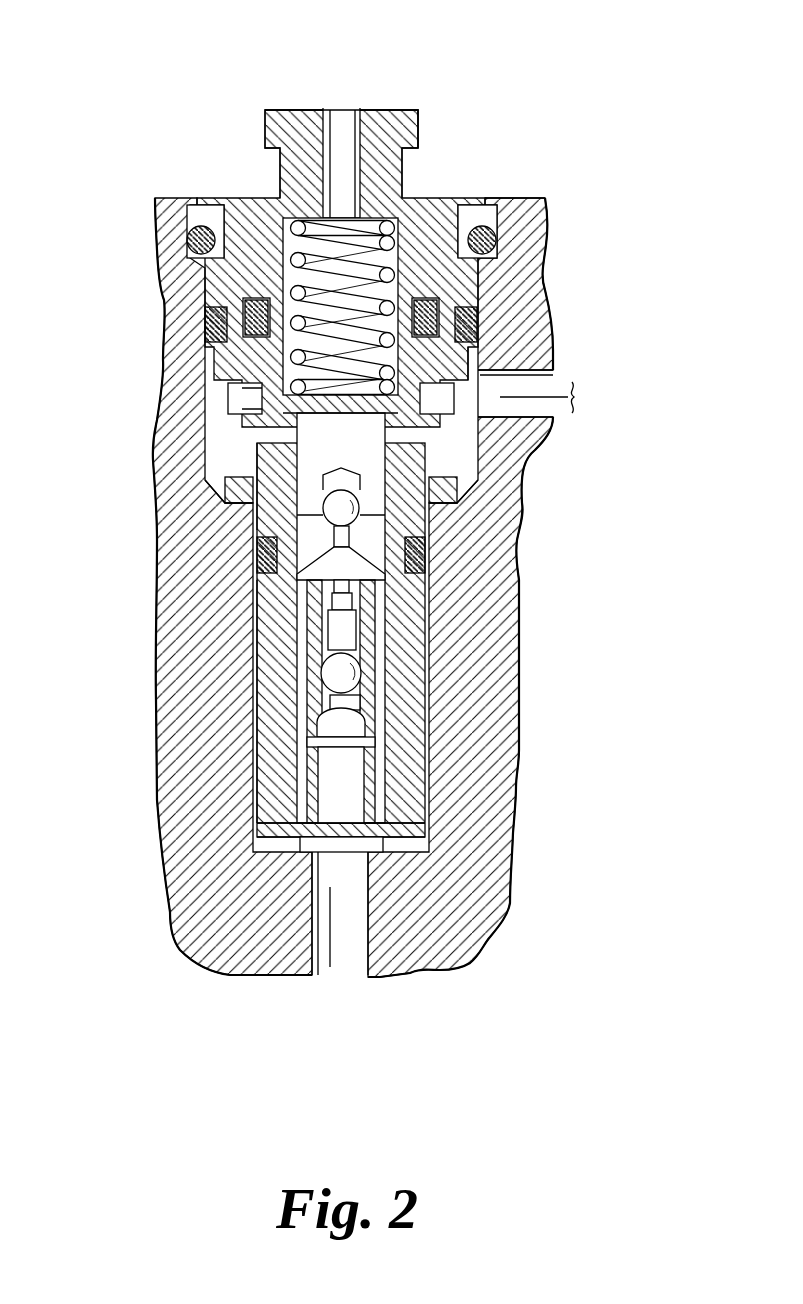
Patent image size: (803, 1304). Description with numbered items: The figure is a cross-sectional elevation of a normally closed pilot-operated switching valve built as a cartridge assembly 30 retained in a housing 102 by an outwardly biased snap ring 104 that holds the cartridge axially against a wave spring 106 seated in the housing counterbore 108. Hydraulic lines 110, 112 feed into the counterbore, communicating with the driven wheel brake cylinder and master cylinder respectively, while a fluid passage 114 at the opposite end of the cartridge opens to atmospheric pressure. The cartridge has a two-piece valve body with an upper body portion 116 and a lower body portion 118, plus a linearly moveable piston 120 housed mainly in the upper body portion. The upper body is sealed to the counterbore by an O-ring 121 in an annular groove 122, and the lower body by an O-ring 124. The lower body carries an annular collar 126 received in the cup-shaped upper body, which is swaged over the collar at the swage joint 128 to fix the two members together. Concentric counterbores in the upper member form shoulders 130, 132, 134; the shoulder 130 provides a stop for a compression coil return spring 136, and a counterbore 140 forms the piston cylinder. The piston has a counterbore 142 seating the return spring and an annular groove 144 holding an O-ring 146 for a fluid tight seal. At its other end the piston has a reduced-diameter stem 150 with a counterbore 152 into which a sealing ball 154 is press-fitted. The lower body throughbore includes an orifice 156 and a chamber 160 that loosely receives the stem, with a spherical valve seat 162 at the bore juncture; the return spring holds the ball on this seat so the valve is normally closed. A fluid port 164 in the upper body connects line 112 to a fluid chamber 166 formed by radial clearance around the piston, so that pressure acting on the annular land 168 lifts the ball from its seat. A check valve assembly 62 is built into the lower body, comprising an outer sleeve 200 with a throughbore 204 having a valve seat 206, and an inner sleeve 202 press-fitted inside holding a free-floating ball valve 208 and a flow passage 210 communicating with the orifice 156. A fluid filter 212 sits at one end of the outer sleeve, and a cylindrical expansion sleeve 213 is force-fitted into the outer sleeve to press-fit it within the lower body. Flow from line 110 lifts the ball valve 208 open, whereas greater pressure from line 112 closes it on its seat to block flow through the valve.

The cartridge assembly 30 is at (420, 108).
The check valve assembly 62 is at (290, 677).
The housing 102 is at (548, 280).
The snap ring 104 is at (435, 295).
The wave spring 106 is at (425, 590).
The housing counterbore 108 is at (432, 548).
The hydraulic line 110 is at (348, 943).
The hydraulic line 112 is at (552, 395).
The fluid passage 114 is at (340, 132).
The upper body portion 116 is at (266, 214).
The lower body portion 118 is at (262, 556).
The piston 120 is at (278, 410).
The O-ring 121 is at (232, 318).
The annular groove 122 is at (214, 345).
The O-ring 124 is at (262, 590).
The annular collar 126 is at (270, 527).
The swage joint 128 is at (232, 495).
The shoulder 130 is at (378, 224).
The shoulder 132 is at (392, 290).
The shoulder 134 is at (478, 440).
The return spring 136 is at (228, 208).
The counterbore 140 is at (530, 238).
The piston counterbore 142 is at (470, 333).
The annular groove 144 is at (245, 405).
The O-ring 146 is at (228, 385).
The stem 150 is at (357, 510).
The counterbore 152 is at (400, 516).
The sealing ball 154 is at (380, 585).
The orifice 156 is at (356, 625).
The chamber 160 is at (418, 562).
The spherical valve seat 162 is at (392, 608).
The fluid port 164 is at (392, 358).
The fluid chamber 166 is at (457, 387).
The annular land 168 is at (238, 482).
The outer sleeve 200 is at (350, 673).
The inner sleeve 202 is at (364, 670).
The throughbore 204 is at (362, 740).
The valve seat 206 is at (372, 765).
The ball valve 208 is at (370, 700).
The flow passage 210 is at (352, 640).
The fluid filter 212 is at (305, 845).
The expansion sleeve 213 is at (425, 830).